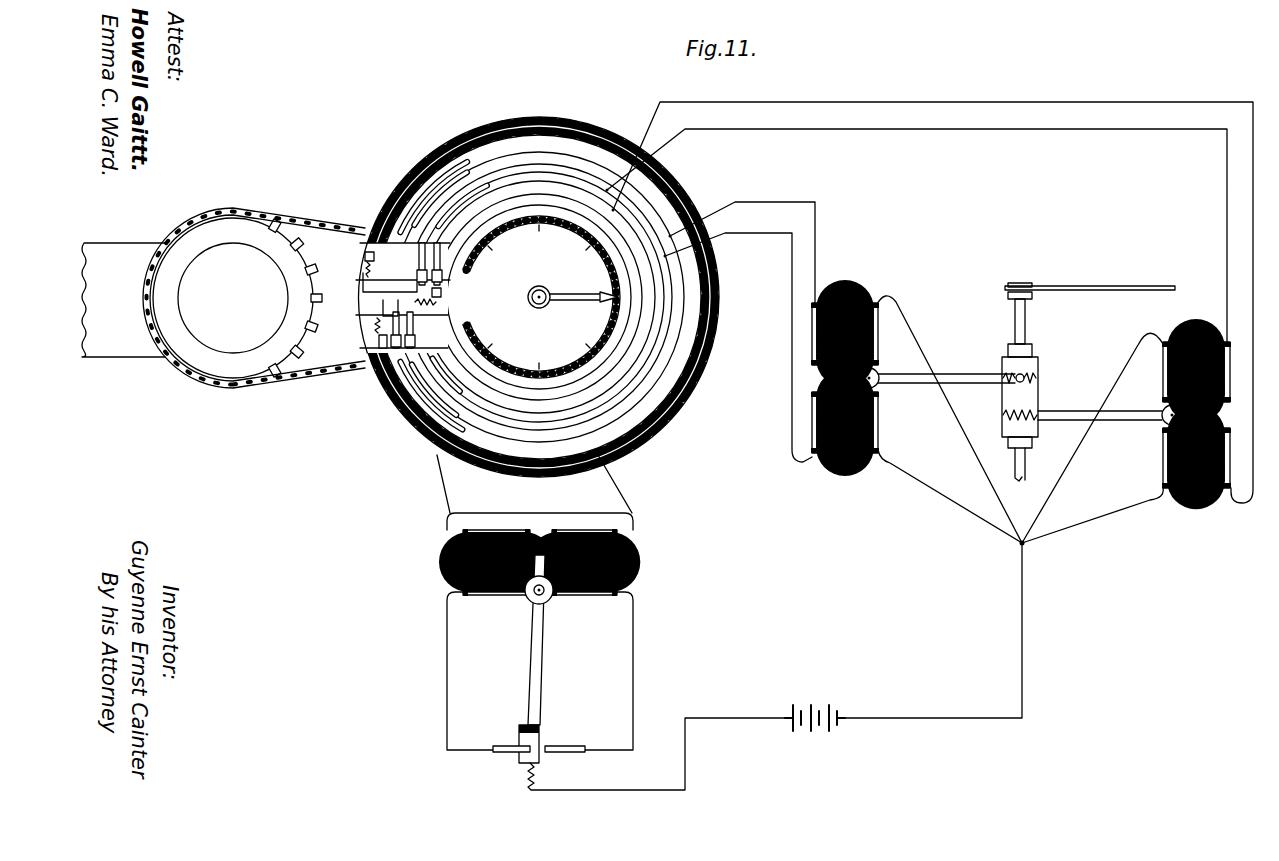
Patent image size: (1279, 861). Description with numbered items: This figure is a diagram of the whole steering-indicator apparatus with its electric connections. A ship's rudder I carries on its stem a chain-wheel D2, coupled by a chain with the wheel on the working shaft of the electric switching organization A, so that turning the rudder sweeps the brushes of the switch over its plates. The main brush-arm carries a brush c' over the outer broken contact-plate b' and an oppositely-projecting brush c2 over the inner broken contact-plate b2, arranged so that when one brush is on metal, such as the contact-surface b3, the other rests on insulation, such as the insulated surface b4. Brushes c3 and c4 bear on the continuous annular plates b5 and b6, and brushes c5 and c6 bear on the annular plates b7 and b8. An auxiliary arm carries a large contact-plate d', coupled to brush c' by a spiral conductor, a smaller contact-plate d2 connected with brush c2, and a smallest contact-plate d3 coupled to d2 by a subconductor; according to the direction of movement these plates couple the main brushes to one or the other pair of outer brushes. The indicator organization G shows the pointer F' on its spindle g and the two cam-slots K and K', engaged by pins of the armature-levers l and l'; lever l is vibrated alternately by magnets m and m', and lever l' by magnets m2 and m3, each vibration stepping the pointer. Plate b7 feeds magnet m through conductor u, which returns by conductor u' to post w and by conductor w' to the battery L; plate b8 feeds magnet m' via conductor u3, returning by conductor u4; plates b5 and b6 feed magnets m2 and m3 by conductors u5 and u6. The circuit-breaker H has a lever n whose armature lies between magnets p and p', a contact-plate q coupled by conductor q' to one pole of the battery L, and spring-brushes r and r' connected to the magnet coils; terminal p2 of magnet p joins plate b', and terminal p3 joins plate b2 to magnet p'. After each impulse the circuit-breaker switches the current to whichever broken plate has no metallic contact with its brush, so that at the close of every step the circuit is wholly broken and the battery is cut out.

The electric switching organization A is at (539, 239).
The outer broken contact-plate b' is at (539, 299).
The inner broken contact-plate b2 is at (632, 425).
The contact-surface b3 is at (432, 412).
The insulated surface b4 is at (440, 160).
The annular plate b5 is at (688, 293).
The annular plate b6 is at (657, 220).
The annular plate b7 is at (558, 172).
The annular plate b8 is at (585, 188).
The brush c' is at (422, 190).
The oppositely-projecting brush c2 is at (420, 395).
The brush c3 is at (410, 365).
The brush c4 is at (400, 378).
The brush c5 is at (430, 225).
The brush c6 is at (462, 208).
The large contact-plate d' is at (390, 272).
The smaller contact-plate d2 is at (383, 308).
The smallest contact-plate d3 is at (441, 292).
The chain-wheel D2 is at (262, 217).
The ship's rudder I is at (123, 277).
The conductor u is at (933, 291).
The conductor u' is at (1092, 518).
The conductor u3 is at (917, 231).
The conductor u4 is at (1092, 438).
The conductor u5 is at (742, 239).
The conductor u6 is at (738, 338).
The magnet m is at (1196, 468).
The magnet m' is at (1196, 361).
The magnet m2 is at (845, 323).
The magnet m3 is at (845, 435).
The indicator organization G is at (949, 405).
The pointer F' is at (1090, 276).
The spindle g is at (1026, 390).
The cam-slot K is at (1002, 410).
The cam-slot K' is at (1039, 373).
The armature-lever l is at (1124, 429).
The armature-lever l' is at (922, 369).
The post w is at (1033, 549).
The conductor w' is at (948, 630).
The magnet p is at (480, 562).
The magnet p' is at (599, 562).
The terminal p2 is at (458, 484).
The terminal p3 is at (625, 484).
The circuit-breaker H is at (540, 631).
The armature-lever n is at (540, 660).
The contact-plate q is at (546, 736).
The conductor q' is at (636, 754).
The spring-brush r is at (506, 735).
The spring-brush r' is at (567, 763).
The battery L is at (815, 704).